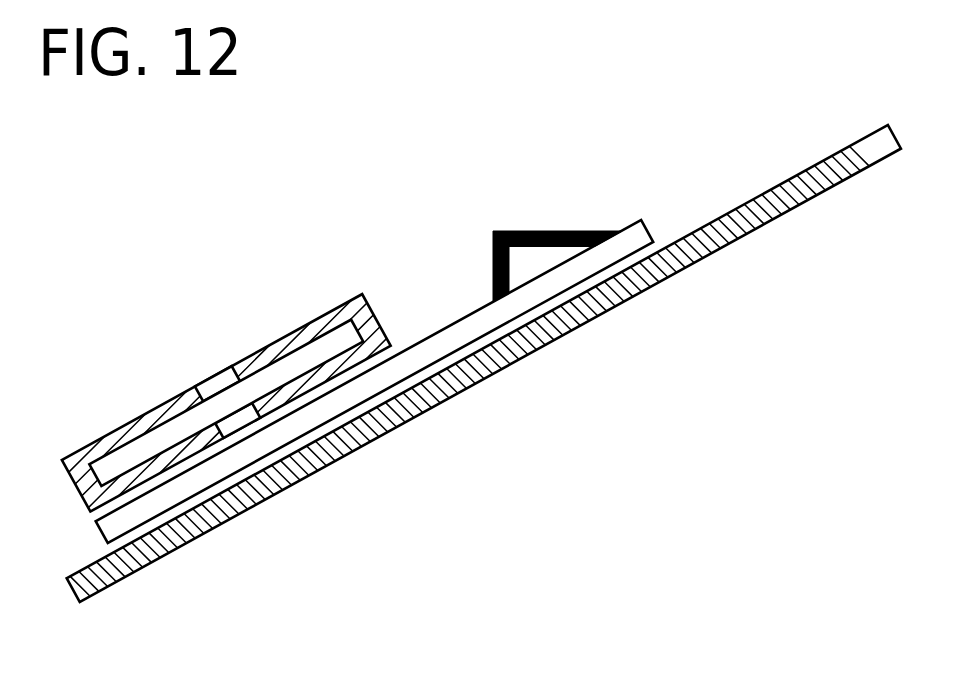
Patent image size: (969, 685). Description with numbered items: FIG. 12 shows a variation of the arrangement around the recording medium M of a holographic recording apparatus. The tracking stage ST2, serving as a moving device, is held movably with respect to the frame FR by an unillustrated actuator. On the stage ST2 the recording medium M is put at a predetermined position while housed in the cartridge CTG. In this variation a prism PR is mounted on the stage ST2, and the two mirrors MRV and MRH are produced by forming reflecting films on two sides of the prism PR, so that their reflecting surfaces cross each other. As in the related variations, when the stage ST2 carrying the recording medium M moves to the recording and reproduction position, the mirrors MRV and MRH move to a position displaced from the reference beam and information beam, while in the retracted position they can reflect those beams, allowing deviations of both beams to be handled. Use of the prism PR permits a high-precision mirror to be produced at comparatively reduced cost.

The frame FR is at (440, 404).
The tracking stage ST2 is at (253, 453).
The cartridge CTG is at (100, 436).
The recording medium M is at (300, 358).
The mirror MRV is at (492, 246).
The mirror MRH is at (552, 232).
The prism PR is at (535, 263).